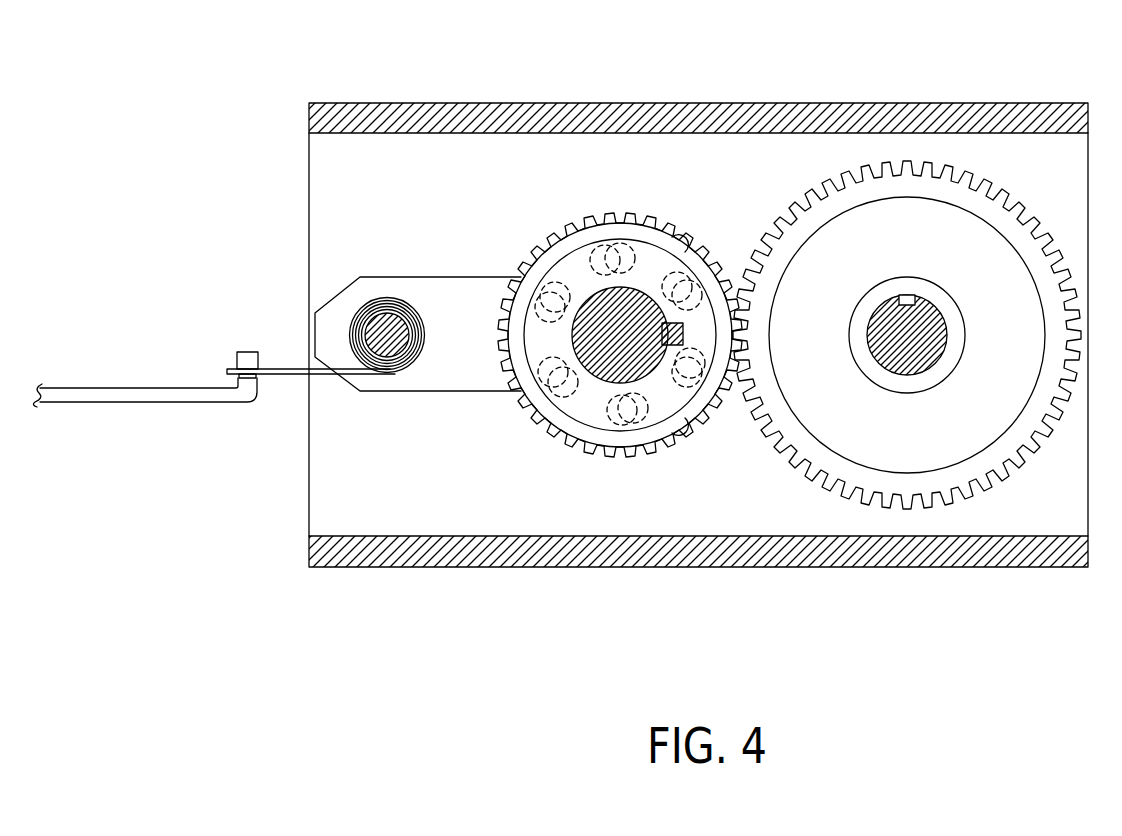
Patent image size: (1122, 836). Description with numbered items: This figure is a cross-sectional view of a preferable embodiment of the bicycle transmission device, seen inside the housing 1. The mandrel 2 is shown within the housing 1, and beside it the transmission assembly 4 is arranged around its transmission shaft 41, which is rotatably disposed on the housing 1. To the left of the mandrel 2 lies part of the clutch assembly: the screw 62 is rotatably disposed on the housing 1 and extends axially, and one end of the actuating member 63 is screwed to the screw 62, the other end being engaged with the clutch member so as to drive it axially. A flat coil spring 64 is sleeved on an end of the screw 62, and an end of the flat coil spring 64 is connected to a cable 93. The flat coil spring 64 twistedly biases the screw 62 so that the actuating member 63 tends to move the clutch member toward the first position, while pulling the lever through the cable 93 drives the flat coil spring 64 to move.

The housing 1 is at (392, 557).
The mandrel 2 is at (608, 368).
The transmission assembly 4 is at (987, 485).
The transmission shaft 41 is at (902, 355).
The screw 62 is at (378, 313).
The actuating member 63 is at (458, 293).
The flat coil spring 64 is at (353, 327).
The cable 93 is at (150, 397).